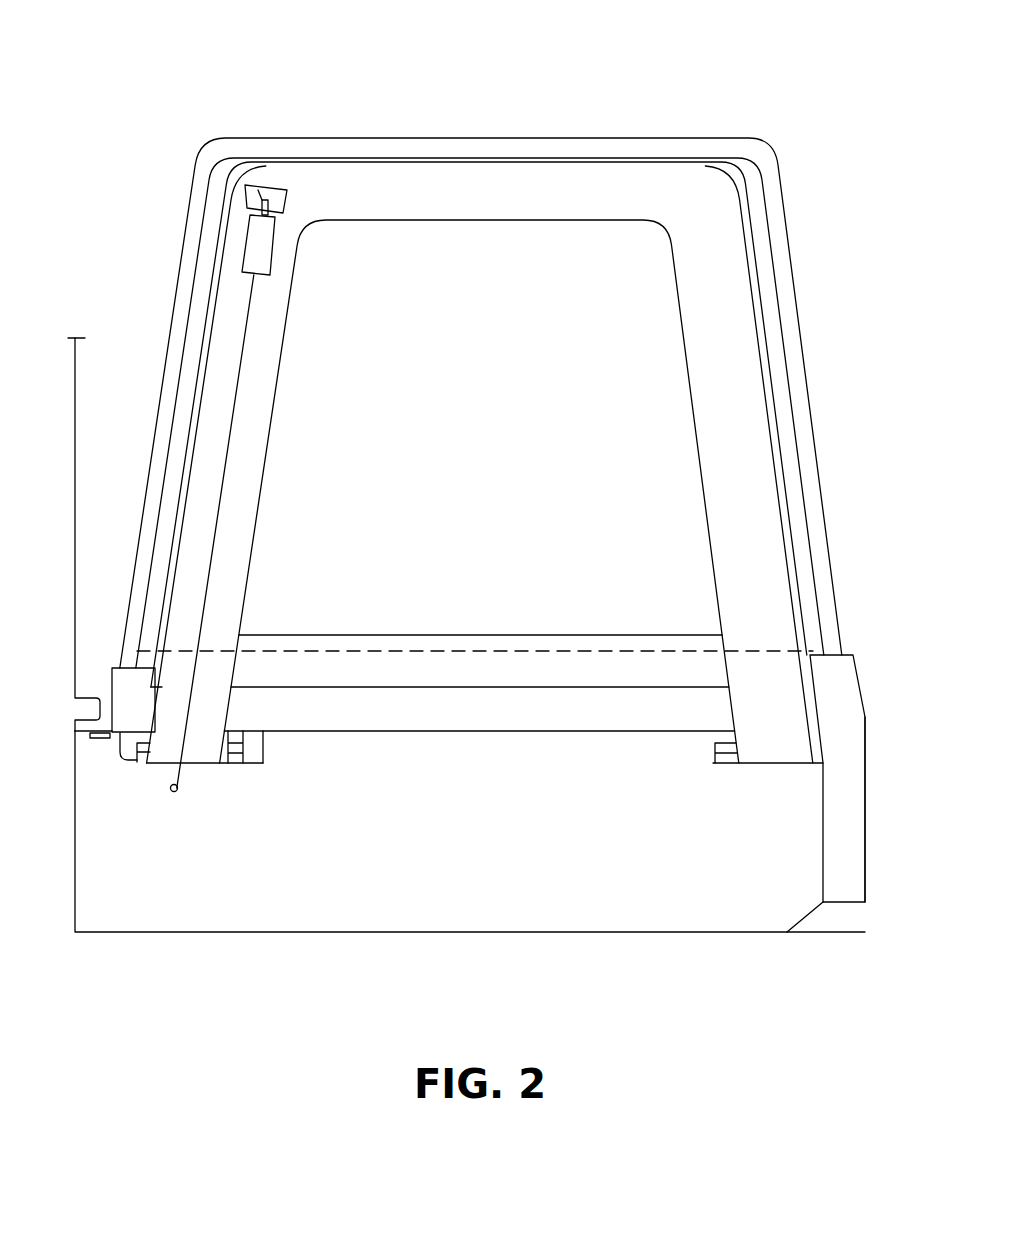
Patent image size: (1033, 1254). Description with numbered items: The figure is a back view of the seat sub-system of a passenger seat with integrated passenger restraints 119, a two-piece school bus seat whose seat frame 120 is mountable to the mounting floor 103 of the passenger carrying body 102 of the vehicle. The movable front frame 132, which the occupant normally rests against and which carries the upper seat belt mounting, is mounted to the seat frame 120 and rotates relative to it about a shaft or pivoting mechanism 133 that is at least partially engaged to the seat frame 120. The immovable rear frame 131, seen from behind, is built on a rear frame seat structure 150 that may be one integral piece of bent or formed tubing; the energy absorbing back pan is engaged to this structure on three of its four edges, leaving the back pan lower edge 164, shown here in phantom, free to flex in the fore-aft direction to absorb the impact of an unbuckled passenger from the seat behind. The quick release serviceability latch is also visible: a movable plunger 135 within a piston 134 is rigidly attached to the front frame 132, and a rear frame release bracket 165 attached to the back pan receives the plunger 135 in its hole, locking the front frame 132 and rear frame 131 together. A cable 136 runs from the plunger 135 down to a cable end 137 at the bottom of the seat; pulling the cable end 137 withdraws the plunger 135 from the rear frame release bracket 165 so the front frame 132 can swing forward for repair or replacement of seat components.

The passenger carrying body 102 is at (88, 365).
The mounting floor 103 is at (440, 938).
The passenger seat with integrated passenger restraints 119 is at (865, 837).
The seat frame 120 is at (864, 665).
The rear frame 131 is at (203, 148).
The front frame 132 is at (372, 172).
The pivoting mechanism 133 is at (263, 733).
The piston 134 is at (274, 253).
The plunger 135 is at (279, 186).
The cable 136 is at (221, 457).
The cable end 137 is at (184, 805).
The rear frame seat structure 150 is at (768, 148).
The back pan lower edge 164 is at (656, 646).
The rear frame release bracket 165 is at (248, 190).